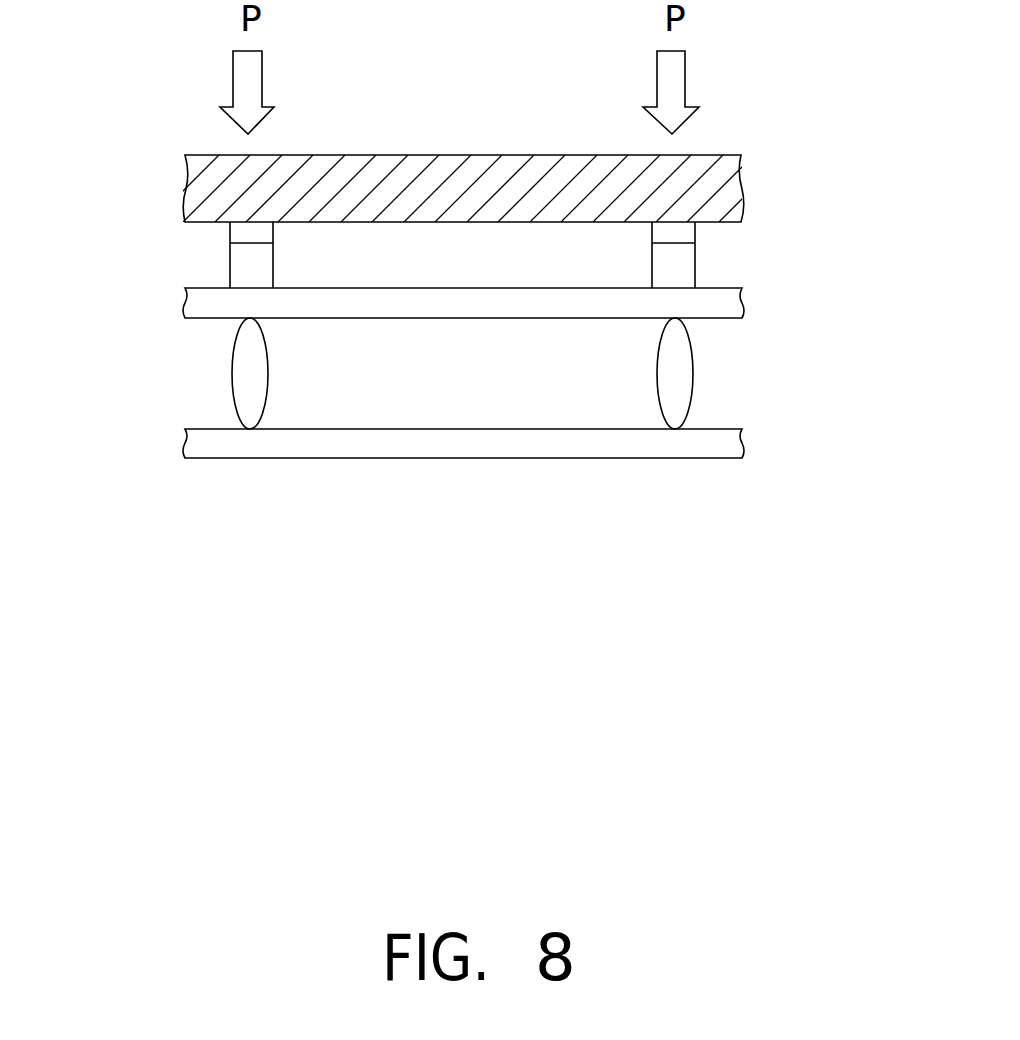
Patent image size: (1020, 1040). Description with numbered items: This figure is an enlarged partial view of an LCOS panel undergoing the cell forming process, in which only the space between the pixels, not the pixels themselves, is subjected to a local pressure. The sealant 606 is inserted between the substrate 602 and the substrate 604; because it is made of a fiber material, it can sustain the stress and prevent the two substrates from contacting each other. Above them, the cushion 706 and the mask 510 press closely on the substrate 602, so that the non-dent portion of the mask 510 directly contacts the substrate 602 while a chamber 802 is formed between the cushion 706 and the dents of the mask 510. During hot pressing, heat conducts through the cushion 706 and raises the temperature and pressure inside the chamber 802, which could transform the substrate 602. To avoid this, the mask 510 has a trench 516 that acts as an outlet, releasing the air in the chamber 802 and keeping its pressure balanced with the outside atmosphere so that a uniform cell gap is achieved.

The cushion 706 is at (742, 182).
The chamber 802 is at (423, 257).
The trench structure 516 is at (242, 230).
The mask 510 is at (688, 267).
The substrate 602 is at (185, 307).
The sealant 606 is at (678, 378).
The substrate 604 is at (185, 445).